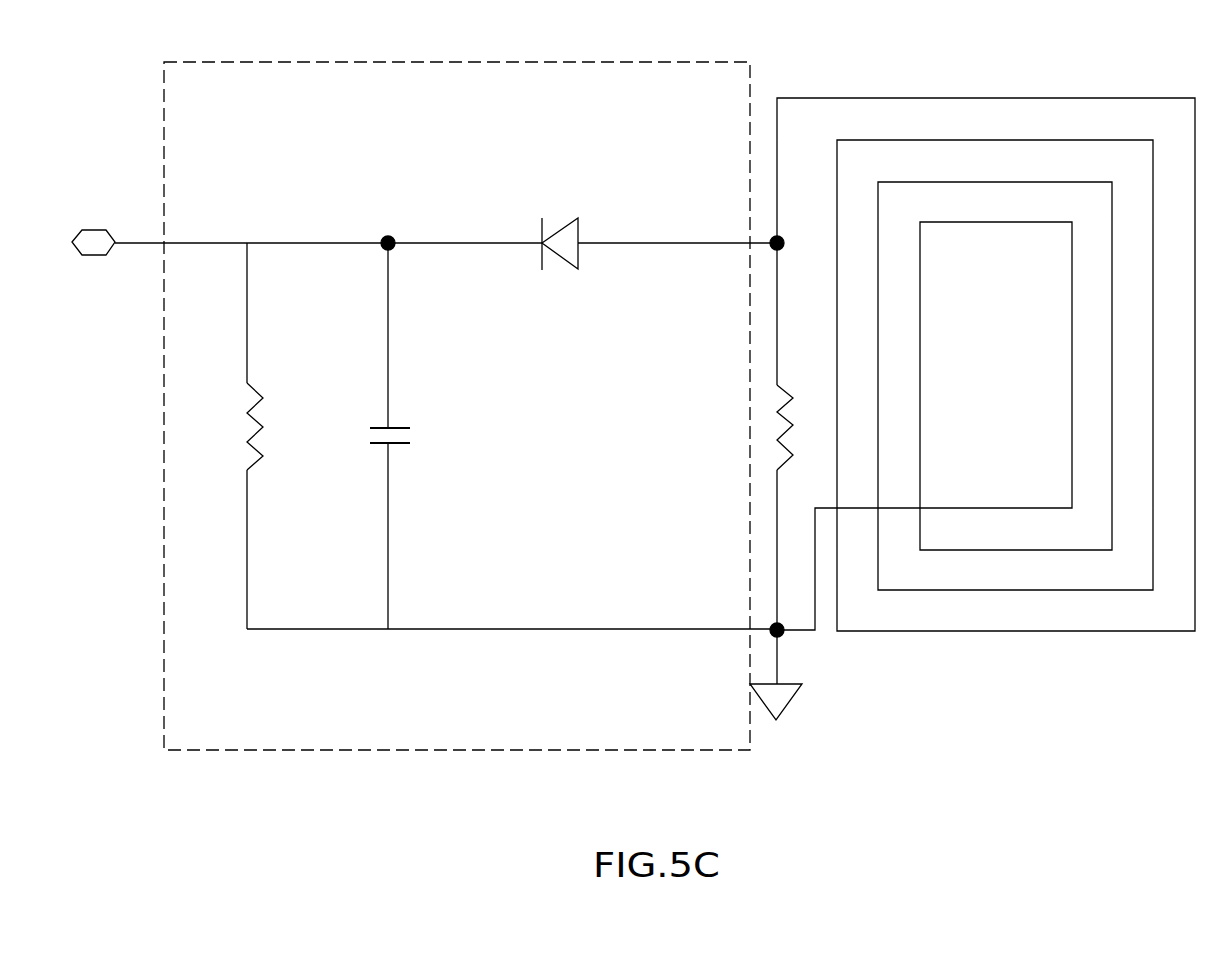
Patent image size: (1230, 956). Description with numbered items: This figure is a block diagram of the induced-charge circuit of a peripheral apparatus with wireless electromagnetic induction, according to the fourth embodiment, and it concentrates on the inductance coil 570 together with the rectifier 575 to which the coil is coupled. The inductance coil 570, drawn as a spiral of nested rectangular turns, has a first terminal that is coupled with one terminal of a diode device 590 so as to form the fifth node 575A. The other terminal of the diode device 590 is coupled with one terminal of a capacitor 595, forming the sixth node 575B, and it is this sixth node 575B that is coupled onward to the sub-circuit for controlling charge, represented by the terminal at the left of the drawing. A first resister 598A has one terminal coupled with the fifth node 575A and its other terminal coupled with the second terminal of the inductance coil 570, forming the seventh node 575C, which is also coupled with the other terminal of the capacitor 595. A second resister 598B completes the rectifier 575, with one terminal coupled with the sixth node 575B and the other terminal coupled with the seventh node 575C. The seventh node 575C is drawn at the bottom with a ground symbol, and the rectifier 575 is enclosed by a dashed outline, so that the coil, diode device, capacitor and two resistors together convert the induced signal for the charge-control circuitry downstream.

The inductance coil 570 is at (1053, 92).
The rectifier 575 is at (164, 147).
The fifth node 575A is at (777, 243).
The sixth node 575B is at (388, 243).
The seventh node 575C is at (780, 634).
The diode device 590 is at (578, 232).
The capacitor 595 is at (389, 428).
The first resister 598A is at (787, 433).
The second resister 598B is at (257, 432).